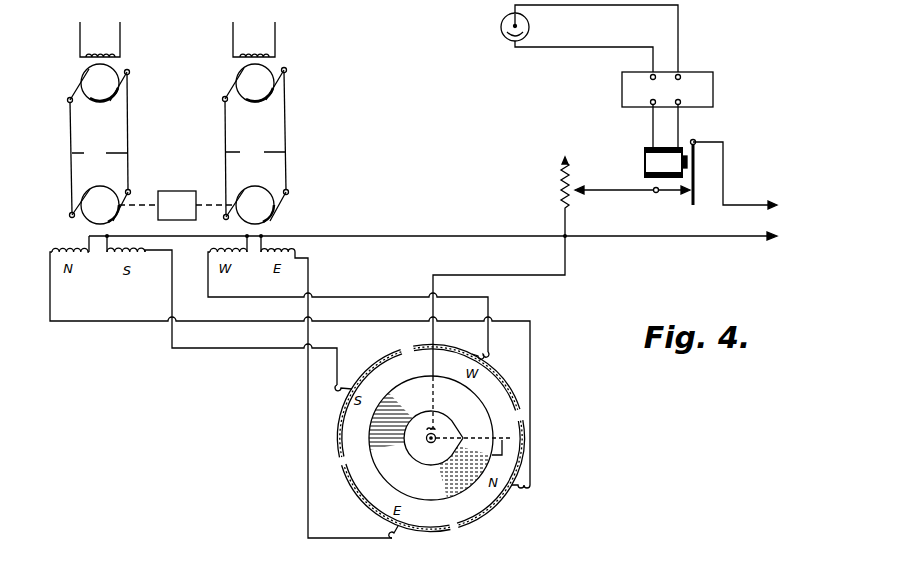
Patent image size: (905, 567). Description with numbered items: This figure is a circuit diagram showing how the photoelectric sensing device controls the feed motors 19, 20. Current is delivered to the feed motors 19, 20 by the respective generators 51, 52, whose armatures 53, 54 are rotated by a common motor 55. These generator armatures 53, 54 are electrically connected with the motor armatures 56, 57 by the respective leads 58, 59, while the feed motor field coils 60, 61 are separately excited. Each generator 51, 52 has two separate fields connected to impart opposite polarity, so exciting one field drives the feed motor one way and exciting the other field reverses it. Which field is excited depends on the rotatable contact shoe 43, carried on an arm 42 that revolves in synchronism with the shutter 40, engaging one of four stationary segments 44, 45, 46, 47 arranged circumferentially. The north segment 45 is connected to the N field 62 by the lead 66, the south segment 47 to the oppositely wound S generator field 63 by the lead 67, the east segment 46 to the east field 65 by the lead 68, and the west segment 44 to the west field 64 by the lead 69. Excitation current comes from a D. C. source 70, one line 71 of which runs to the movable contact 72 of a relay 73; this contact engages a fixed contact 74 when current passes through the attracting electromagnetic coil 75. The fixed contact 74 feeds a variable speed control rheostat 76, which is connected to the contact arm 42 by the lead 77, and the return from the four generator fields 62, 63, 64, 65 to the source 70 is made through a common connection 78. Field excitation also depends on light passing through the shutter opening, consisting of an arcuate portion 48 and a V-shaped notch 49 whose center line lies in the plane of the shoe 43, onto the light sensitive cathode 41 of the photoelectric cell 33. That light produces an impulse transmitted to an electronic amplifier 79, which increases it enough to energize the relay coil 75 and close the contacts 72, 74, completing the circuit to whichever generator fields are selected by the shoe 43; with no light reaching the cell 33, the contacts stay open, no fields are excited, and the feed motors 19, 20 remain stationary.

The feed motor 19 is at (124, 68).
The feed motor 20 is at (281, 66).
The photoelectric cell 33 is at (502, 27).
The shutter 40 is at (437, 496).
The light sensitive cathode 41 is at (509, 41).
The arm 42 is at (492, 452).
The contact shoe 43 is at (518, 410).
The west segment 44 is at (474, 352).
The north segment 45 is at (509, 500).
The east segment 46 is at (386, 518).
The south segment 47 is at (367, 376).
The arcuate portion 48 is at (413, 455).
The V-shaped notch 49 is at (462, 436).
The generator 51 is at (77, 234).
The generator 52 is at (276, 230).
The generator armature 53 is at (101, 190).
The generator armature 54 is at (257, 190).
The common motor 55 is at (180, 191).
The motor armature 56 is at (101, 102).
The motor armature 57 is at (259, 101).
The lead 58 is at (100, 153).
The lead 59 is at (256, 152).
The feed motor field coil 60 is at (96, 52).
The feed motor field coil 61 is at (251, 52).
The N field 62 is at (88, 258).
The S generator field 63 is at (145, 257).
The west field 64 is at (243, 258).
The east field 65 is at (289, 258).
The lead 66 is at (50, 308).
The lead 67 is at (173, 275).
The lead 68 is at (309, 279).
The lead 69 is at (208, 276).
The D. C. source 70 is at (787, 211).
The line 71 is at (725, 200).
The movable contact 72 is at (696, 185).
The relay 73 is at (693, 138).
The fixed contact 74 is at (688, 196).
The electromagnetic coil 75 is at (645, 161).
The variable speed control rheostat 76 is at (560, 206).
The lead 77 is at (540, 275).
The common connection 78 is at (445, 236).
The electronic amplifier 79 is at (714, 73).